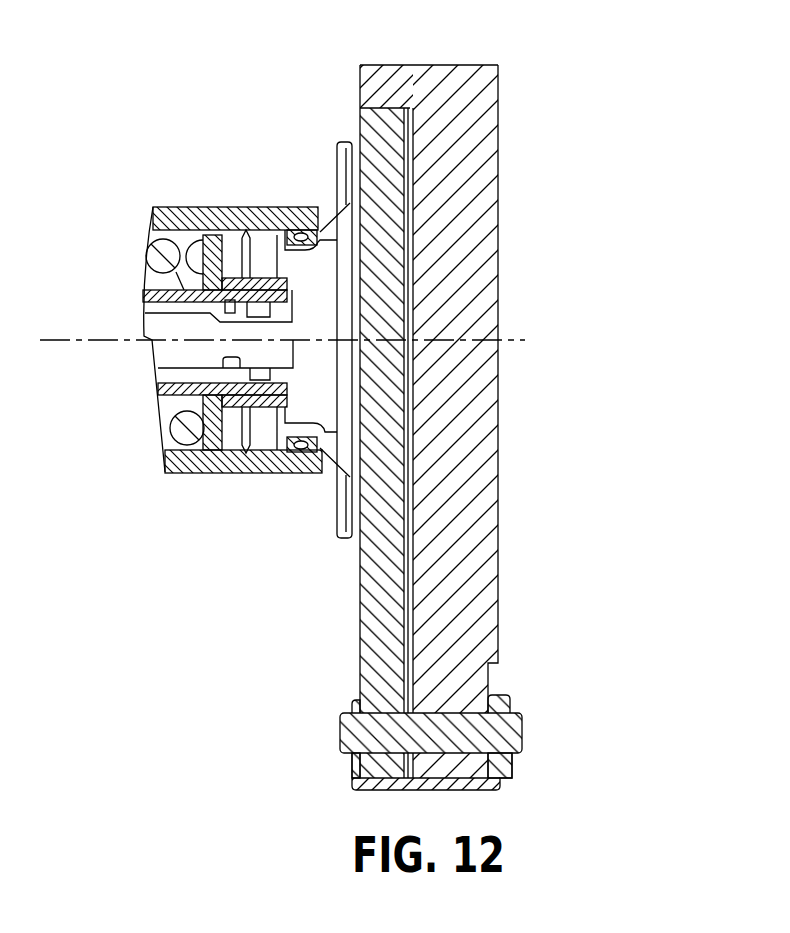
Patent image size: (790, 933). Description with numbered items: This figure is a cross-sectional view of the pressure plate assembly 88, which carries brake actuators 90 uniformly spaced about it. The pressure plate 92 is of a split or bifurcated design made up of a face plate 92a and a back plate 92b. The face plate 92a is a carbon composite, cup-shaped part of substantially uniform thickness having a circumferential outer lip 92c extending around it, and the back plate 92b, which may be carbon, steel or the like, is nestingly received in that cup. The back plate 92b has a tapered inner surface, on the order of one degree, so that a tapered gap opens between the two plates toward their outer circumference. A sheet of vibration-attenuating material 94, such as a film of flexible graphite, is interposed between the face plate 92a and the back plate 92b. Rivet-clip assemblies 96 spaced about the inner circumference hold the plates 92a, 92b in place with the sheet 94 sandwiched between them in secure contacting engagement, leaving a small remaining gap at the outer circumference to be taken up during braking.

The pressure plate assembly 88 is at (245, 168).
The brake actuator 90 is at (172, 207).
The pressure plate 92 is at (522, 598).
The face plate 92a is at (498, 228).
The back plate 92b is at (362, 600).
The circumferential outer lip 92c is at (358, 88).
The vibration-attenuating sheet 94 is at (409, 562).
The rivet-clip assembly 96 is at (339, 727).